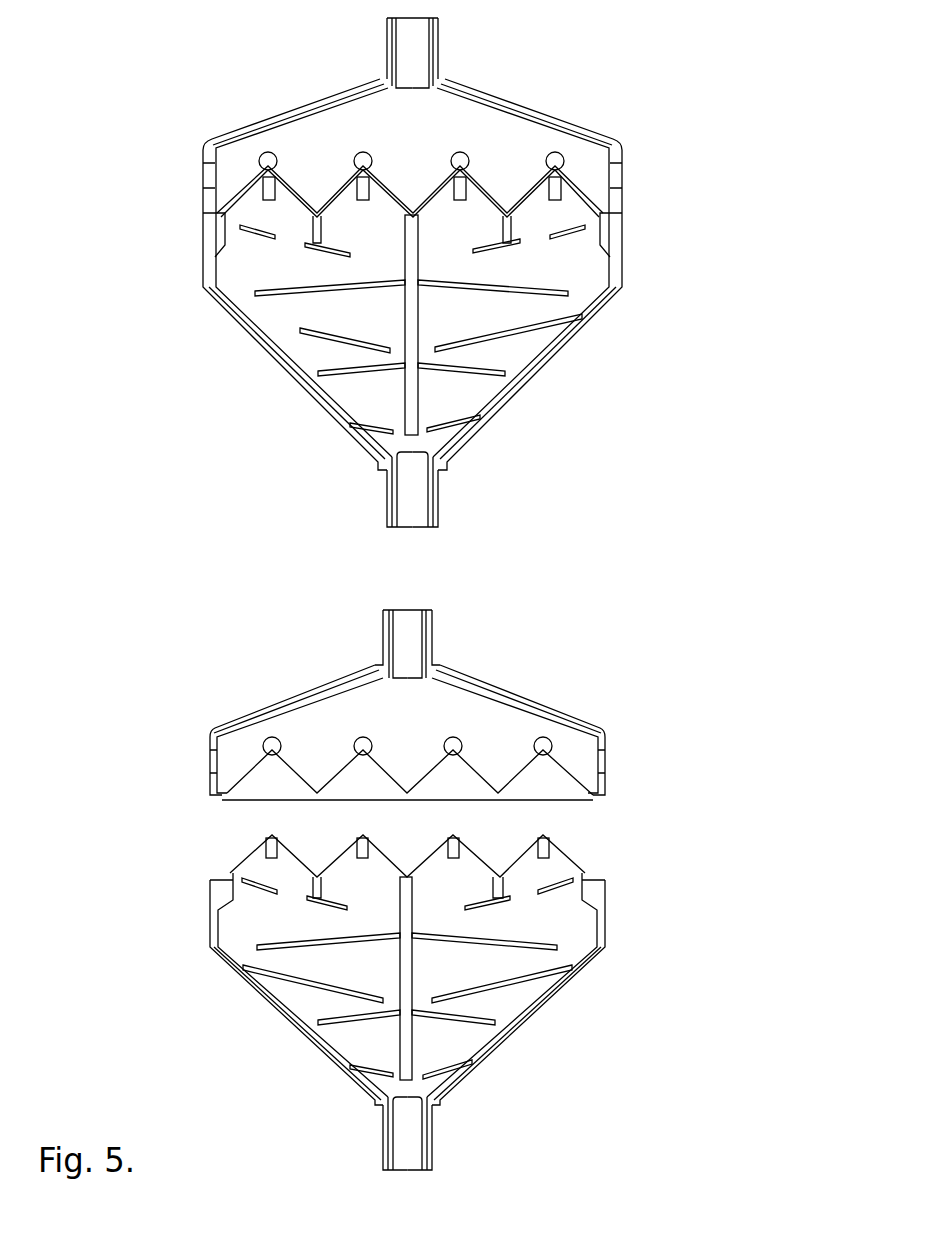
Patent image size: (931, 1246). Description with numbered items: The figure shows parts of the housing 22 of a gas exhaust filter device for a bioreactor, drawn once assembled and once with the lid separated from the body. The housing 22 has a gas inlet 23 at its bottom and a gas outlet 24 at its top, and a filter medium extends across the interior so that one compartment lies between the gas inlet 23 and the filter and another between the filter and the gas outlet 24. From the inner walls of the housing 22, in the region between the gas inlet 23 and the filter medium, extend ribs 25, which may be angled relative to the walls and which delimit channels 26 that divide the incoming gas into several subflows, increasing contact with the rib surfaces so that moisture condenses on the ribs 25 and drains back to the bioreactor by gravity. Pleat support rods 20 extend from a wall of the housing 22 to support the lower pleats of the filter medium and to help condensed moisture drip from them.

The pleat support rods 20 is at (508, 220).
The housing 22 is at (684, 221).
The gas inlet 23 is at (408, 500).
The gas outlet 24 is at (407, 33).
The ribs 25 is at (337, 368).
The channels 26 is at (368, 395).